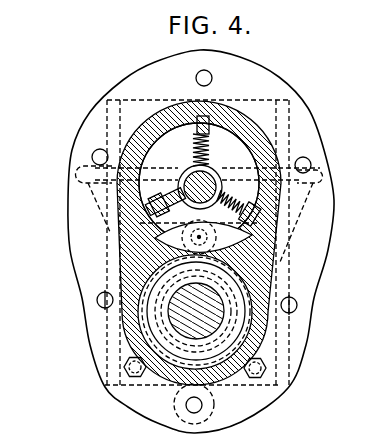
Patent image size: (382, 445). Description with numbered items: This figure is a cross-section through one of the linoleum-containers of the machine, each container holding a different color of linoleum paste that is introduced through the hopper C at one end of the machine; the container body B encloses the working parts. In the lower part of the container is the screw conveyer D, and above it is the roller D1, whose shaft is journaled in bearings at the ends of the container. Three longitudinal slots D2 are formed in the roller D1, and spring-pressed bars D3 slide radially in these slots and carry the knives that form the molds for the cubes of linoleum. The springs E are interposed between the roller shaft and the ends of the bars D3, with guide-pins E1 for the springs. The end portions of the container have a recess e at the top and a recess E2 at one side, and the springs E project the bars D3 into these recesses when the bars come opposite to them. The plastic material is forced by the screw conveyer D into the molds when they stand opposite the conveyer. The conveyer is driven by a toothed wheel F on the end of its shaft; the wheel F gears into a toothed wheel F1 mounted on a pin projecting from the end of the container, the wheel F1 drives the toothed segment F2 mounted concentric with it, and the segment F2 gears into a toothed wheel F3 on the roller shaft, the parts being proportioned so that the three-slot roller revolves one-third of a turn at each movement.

The casing B is at (120, 200).
The hopper C is at (88, 183).
The screw conveyer D is at (188, 334).
The roller D1 is at (199, 183).
The longitudinal slots D2 is at (238, 106).
The spring-pressed bars D3 is at (157, 115).
The springs E is at (210, 146).
The guide-pins E1 is at (200, 187).
The recess E2 is at (262, 250).
The toothed wheel F is at (146, 384).
The toothed wheel F1 is at (98, 304).
The toothed segment F2 is at (126, 247).
The toothed wheel F3 is at (252, 186).
The recess e is at (210, 114).